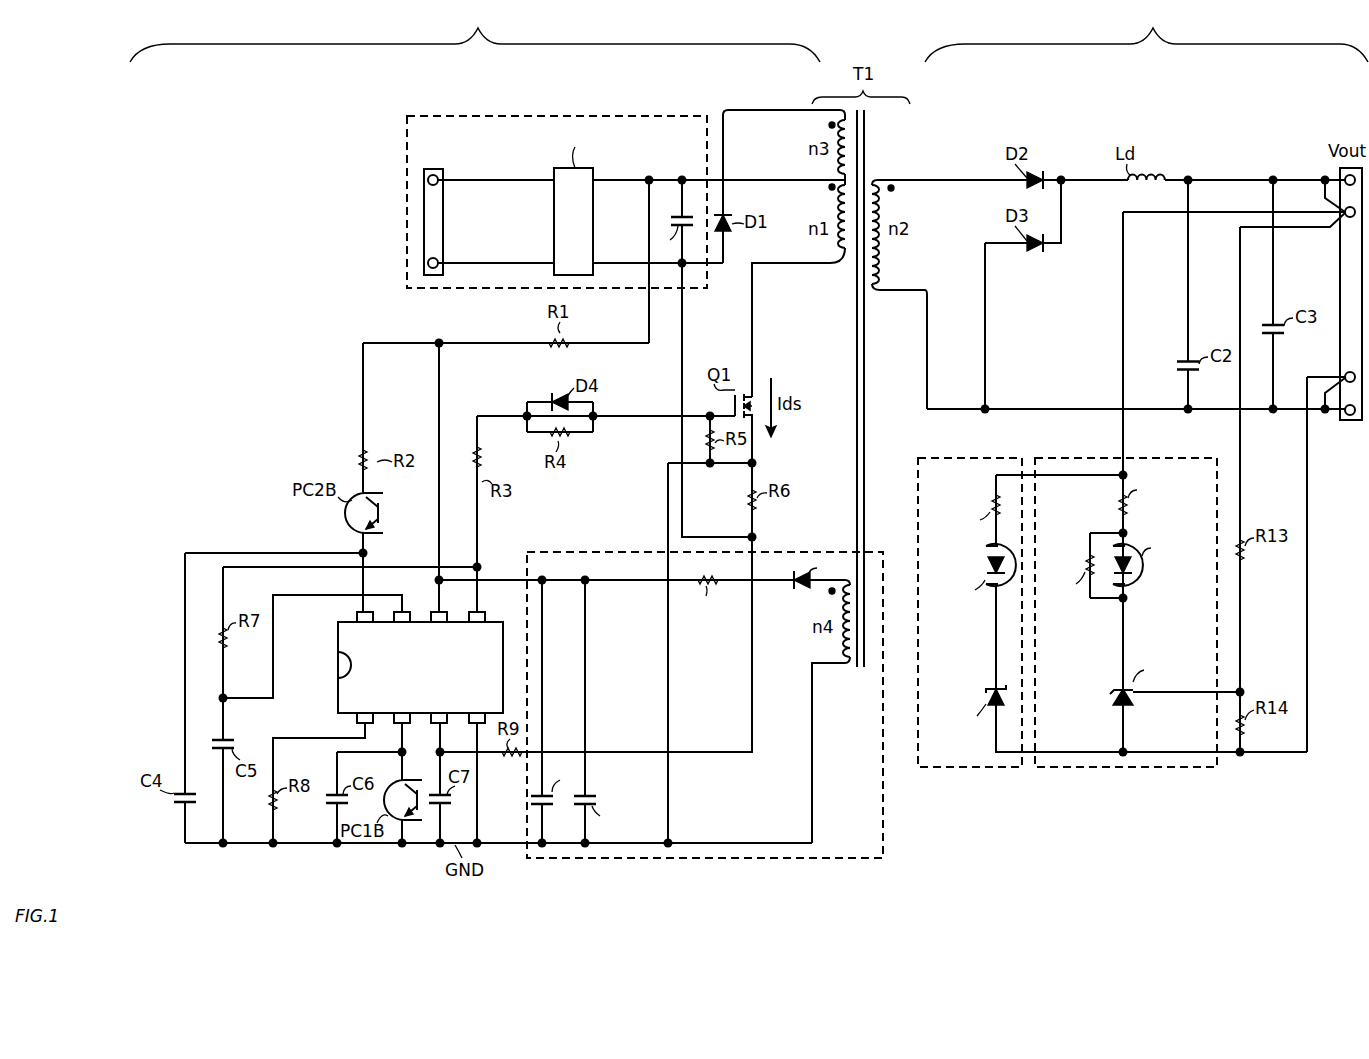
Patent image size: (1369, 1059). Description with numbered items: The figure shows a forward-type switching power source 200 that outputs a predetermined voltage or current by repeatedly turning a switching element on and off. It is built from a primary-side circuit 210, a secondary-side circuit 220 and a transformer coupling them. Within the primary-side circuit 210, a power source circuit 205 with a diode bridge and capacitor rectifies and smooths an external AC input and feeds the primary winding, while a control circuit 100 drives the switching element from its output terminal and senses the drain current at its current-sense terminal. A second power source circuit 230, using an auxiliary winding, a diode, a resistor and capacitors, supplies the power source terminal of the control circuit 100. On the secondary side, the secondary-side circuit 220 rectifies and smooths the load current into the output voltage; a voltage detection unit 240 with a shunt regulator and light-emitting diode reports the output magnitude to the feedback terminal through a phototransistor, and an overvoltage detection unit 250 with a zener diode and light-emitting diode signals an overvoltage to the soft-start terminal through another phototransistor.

The control circuit 100 is at (338, 648).
The switching power source 200 is at (862, 921).
The power source circuit 205 is at (433, 116).
The primary-side circuit 210 is at (475, 34).
The secondary-side circuit 220 is at (1146, 34).
The power source circuit 230 is at (660, 858).
The voltage detection unit 240 is at (1122, 767).
The overvoltage detection unit 250 is at (968, 767).